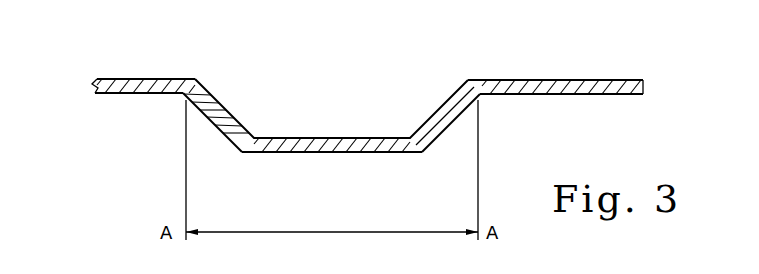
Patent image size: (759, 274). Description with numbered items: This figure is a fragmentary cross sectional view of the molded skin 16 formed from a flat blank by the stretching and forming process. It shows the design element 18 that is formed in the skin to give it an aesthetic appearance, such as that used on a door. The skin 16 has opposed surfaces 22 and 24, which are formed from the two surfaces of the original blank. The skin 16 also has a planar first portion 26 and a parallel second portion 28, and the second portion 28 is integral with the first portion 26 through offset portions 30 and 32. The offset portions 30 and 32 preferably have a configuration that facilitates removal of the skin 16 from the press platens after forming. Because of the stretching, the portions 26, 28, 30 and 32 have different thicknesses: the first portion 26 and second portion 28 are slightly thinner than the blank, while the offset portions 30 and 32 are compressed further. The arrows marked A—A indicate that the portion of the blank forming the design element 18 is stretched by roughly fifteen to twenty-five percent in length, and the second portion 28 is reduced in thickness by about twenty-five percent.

The molded skin 16 is at (668, 85).
The design element 18 is at (330, 96).
The opposed surface 22 is at (488, 82).
The opposed surface 24 is at (570, 97).
The first portion 26 is at (118, 79).
The second portion 28 is at (350, 153).
The offset portion 30 is at (445, 112).
The offset portion 32 is at (222, 106).